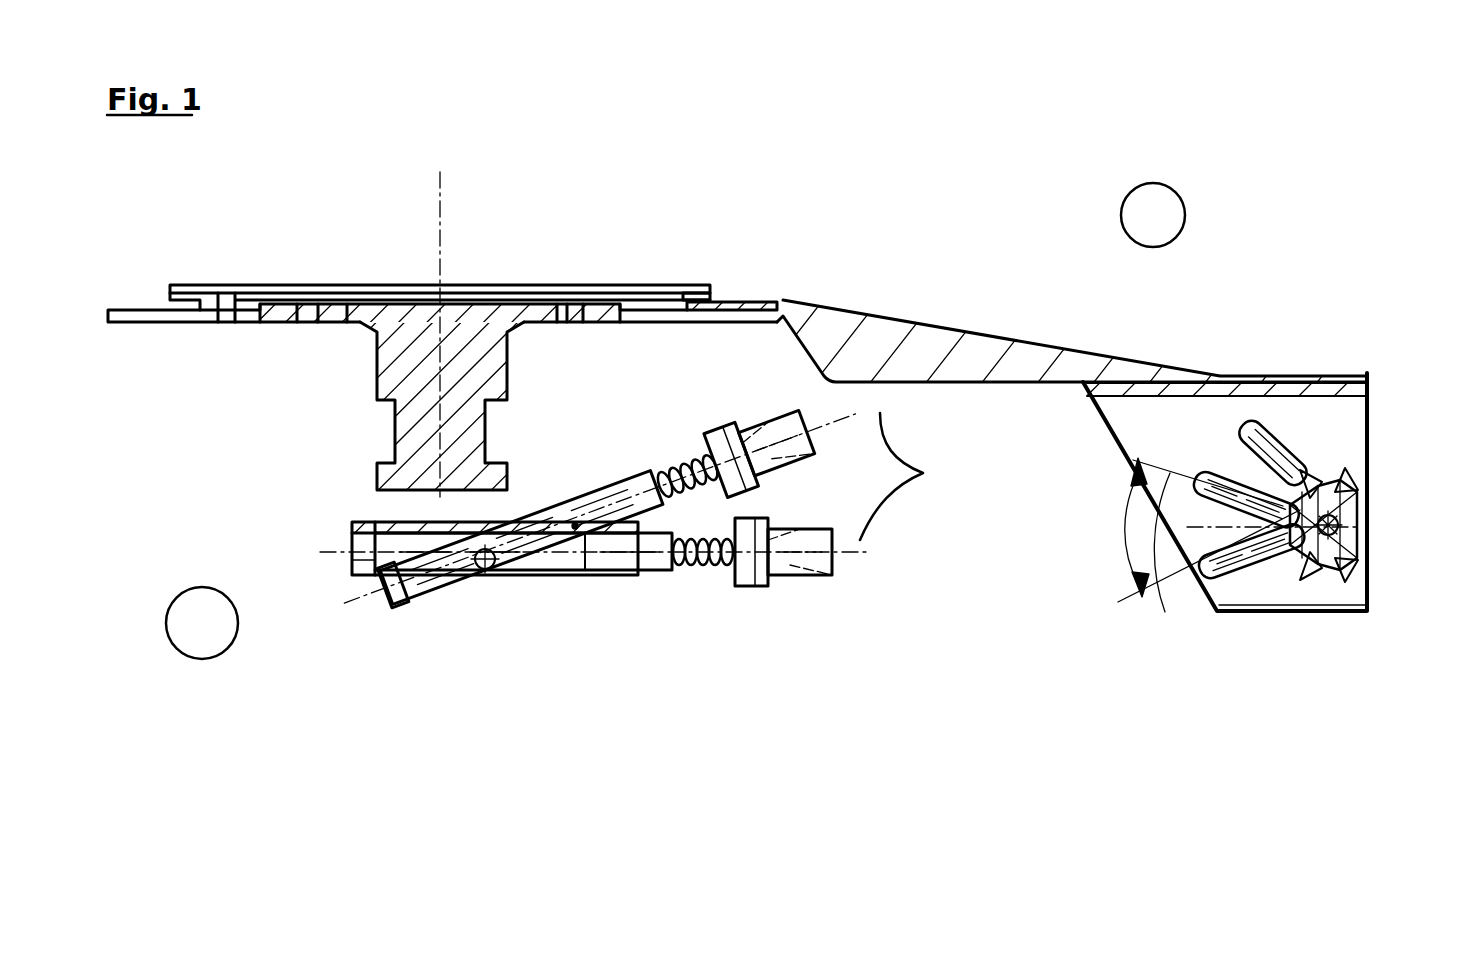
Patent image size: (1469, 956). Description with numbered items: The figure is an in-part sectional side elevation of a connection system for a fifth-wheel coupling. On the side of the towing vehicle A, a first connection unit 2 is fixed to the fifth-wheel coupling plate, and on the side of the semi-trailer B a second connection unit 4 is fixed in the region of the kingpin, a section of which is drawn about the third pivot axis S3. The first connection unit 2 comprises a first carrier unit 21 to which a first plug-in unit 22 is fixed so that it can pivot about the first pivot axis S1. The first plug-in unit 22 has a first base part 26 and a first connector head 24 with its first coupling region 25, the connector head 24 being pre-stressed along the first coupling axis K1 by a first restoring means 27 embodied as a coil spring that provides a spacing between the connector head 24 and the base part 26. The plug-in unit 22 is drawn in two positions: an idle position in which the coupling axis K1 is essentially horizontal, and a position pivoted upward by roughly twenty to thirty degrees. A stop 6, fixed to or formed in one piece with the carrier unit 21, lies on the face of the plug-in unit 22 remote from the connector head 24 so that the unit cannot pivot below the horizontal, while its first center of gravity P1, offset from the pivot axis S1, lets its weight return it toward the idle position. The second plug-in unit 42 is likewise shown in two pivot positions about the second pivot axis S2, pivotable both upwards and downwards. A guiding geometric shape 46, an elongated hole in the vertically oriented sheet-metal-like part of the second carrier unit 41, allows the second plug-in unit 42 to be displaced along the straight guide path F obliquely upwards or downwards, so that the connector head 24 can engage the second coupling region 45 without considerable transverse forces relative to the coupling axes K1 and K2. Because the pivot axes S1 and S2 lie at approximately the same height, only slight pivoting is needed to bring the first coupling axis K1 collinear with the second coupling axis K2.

The first connection unit 2 is at (589, 538).
The second connection unit 4 is at (1296, 368).
The stop 6 is at (385, 522).
The first carrier unit 21 is at (347, 575).
The first plug-in unit 22 is at (669, 584).
The first connector head 24 is at (815, 570).
The first coupling region 25 is at (815, 437).
The first base part 26 is at (555, 520).
The first restoring means 27 is at (690, 470).
The second carrier unit 41 is at (1340, 415).
The second plug-in unit 42 is at (1233, 572).
The second coupling region 45 is at (1228, 600).
The guiding geometric shape 46 is at (1285, 450).
The guide path F is at (1272, 422).
The first coupling axis K1 is at (919, 476).
The second coupling axis K2 is at (1178, 577).
The first center of gravity P1 is at (576, 524).
The first pivot axis S1 is at (483, 580).
The second pivot axis S2 is at (1340, 520).
The third pivot axis S3 is at (440, 248).
The towing vehicle A is at (202, 623).
The semi-trailer B is at (1153, 215).